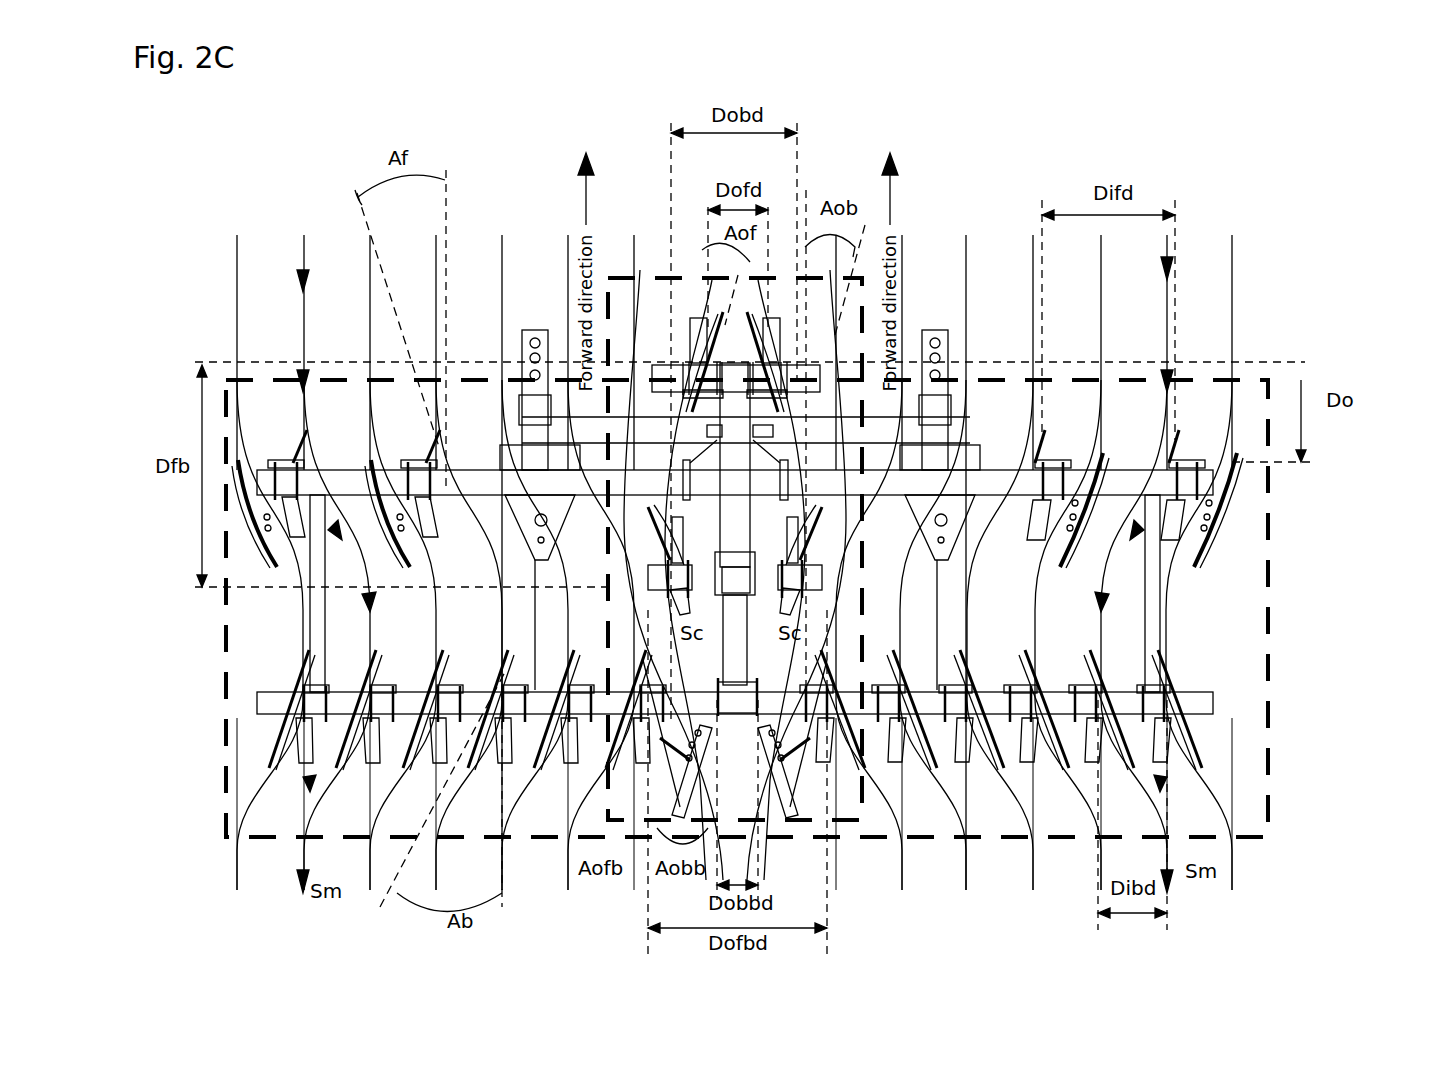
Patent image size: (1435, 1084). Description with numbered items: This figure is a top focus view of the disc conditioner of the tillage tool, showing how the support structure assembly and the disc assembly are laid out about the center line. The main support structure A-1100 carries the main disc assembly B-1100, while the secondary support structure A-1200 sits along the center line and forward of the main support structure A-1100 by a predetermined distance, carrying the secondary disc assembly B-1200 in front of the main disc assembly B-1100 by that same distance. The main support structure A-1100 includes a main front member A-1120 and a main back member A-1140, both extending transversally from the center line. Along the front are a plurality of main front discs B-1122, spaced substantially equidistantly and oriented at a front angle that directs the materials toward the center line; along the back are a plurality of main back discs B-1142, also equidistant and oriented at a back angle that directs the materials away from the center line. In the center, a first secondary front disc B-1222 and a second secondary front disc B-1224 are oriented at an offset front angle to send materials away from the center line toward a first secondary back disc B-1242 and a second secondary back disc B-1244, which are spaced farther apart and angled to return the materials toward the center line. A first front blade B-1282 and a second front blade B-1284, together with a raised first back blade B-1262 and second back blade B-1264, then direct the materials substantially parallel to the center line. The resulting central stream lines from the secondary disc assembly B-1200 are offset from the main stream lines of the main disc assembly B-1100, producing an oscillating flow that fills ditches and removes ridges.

The main support structure A-1100 is at (1268, 838).
The main disc assembly B-1100 is at (1268, 838).
The secondary support structure A-1200 is at (607, 330).
The secondary disc assembly B-1200 is at (607, 330).
The main front member A-1120 is at (352, 460).
The main front discs B-1122 is at (1070, 553).
The main back member A-1140 is at (365, 665).
The main back discs B-1142 is at (1190, 715).
The first secondary front disc B-1222 is at (723, 315).
The second secondary front disc B-1224 is at (748, 315).
The first secondary back disc B-1242 is at (653, 510).
The second secondary back disc B-1244 is at (817, 510).
The first back blade B-1262 is at (705, 760).
The second back blade B-1264 is at (768, 760).
The first front blade B-1282 is at (518, 790).
The second front blade B-1284 is at (830, 705).